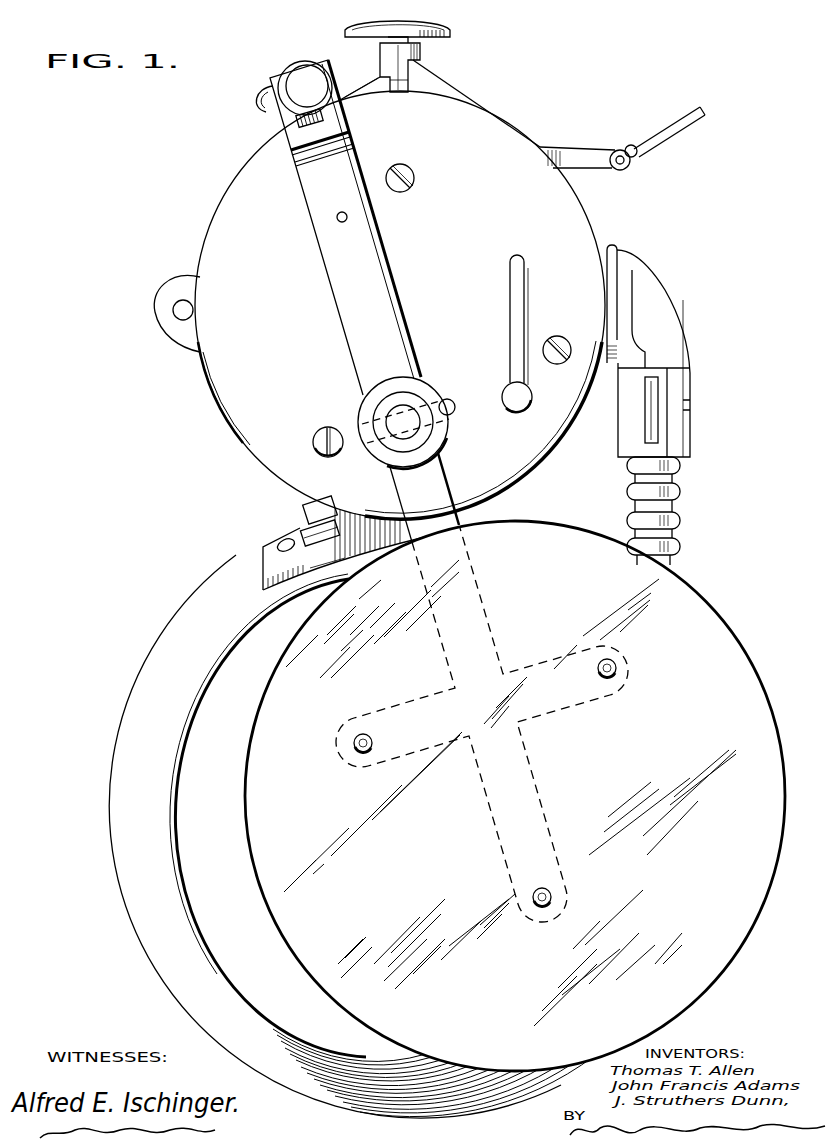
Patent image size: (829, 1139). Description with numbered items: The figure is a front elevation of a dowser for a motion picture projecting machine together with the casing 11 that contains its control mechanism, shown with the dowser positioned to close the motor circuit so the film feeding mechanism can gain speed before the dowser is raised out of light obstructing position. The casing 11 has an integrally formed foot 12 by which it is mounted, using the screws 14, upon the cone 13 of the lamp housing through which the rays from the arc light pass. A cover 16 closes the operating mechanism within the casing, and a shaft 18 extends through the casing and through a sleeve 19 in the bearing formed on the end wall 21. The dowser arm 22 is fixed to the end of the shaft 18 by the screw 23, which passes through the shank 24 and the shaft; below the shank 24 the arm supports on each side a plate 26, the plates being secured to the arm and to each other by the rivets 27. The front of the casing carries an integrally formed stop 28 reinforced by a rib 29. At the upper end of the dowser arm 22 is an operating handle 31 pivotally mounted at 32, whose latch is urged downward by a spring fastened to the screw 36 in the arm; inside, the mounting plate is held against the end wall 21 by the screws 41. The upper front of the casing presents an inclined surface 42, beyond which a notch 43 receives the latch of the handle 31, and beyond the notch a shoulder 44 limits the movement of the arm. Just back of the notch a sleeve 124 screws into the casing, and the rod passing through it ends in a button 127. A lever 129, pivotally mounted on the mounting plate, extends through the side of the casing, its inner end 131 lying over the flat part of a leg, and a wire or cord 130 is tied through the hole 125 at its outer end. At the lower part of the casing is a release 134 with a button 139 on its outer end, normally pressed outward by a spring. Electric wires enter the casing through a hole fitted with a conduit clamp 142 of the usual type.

The casing 11 is at (400, 305).
The foot 12 is at (262, 556).
The cone 13 is at (358, 836).
The screws 14 is at (278, 543).
The cover 16 is at (170, 292).
The shaft 18 is at (386, 441).
The sleeve 19 is at (410, 396).
The end wall 21 is at (242, 409).
The dowser arm 22 is at (364, 301).
The screw 23 is at (449, 400).
The shank 24 is at (368, 413).
The plate 26 is at (744, 968).
The rivets 27 is at (617, 666).
The stop 28 is at (515, 406).
The rib 29 is at (510, 312).
The operating handle 31 is at (297, 72).
The pivot 32 is at (262, 104).
The screw 36 is at (342, 222).
The screws 41 is at (414, 180).
The inclined surface 42 is at (365, 88).
The notch 43 is at (402, 92).
The shoulder 44 is at (413, 73).
The sleeve 124 is at (383, 52).
The hole 125 is at (625, 172).
The button 127 is at (451, 34).
The lever 129 is at (578, 148).
The wire or cord 130 is at (683, 135).
The inner end 131 is at (306, 527).
The release 134 is at (306, 504).
The button 139 is at (311, 560).
The conduit clamp 142 is at (657, 309).